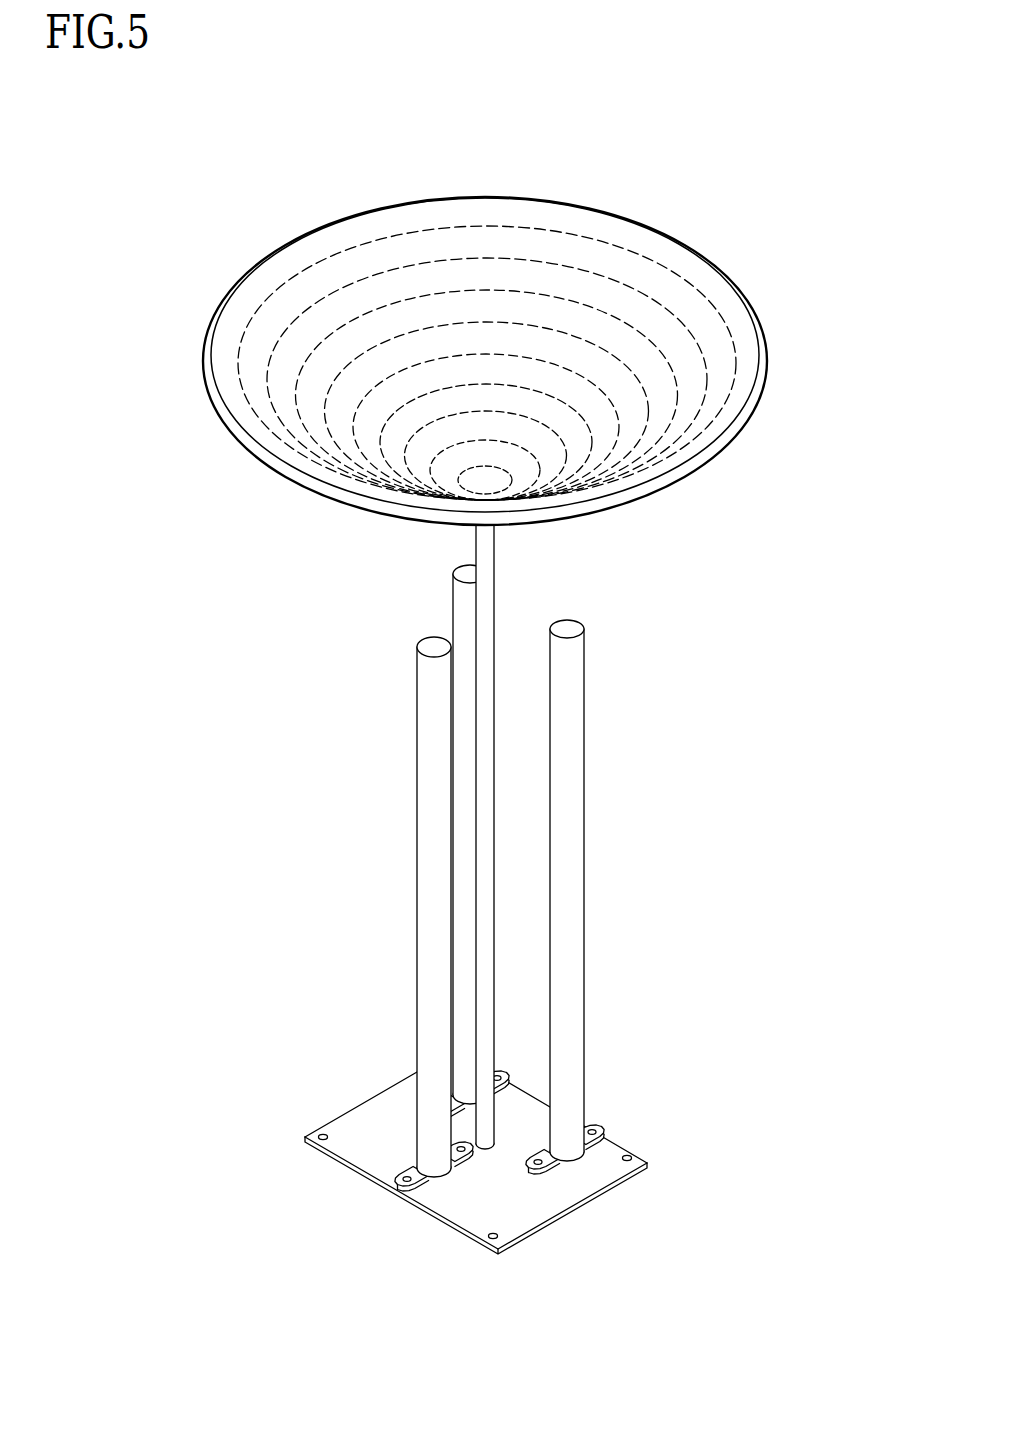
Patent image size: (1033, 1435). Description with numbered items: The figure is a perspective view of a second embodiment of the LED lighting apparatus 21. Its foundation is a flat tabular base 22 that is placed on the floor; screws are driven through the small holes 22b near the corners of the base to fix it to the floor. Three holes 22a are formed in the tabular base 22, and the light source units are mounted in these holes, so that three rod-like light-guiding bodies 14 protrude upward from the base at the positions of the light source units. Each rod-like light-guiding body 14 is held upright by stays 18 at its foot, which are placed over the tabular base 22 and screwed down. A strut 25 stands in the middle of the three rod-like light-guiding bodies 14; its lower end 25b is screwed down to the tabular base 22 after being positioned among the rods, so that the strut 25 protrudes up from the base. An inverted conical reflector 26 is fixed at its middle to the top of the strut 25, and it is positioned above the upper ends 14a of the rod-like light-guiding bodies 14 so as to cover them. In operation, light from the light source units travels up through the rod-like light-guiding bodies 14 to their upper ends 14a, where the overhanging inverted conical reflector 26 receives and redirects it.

The LED lighting apparatus 21 is at (253, 145).
The inverted conical reflector 26 is at (695, 253).
The strut 25 is at (545, 903).
The lower end of the strut 25b is at (487, 1148).
The rod-like light-guiding bodies 14 is at (457, 603).
The upper ends of the rod-like light-guiding bodies 14a is at (565, 625).
The stays 18 is at (398, 1172).
The tabular base 22 is at (622, 1147).
The holes 22a is at (432, 1218).
The small holes 22b is at (477, 1243).